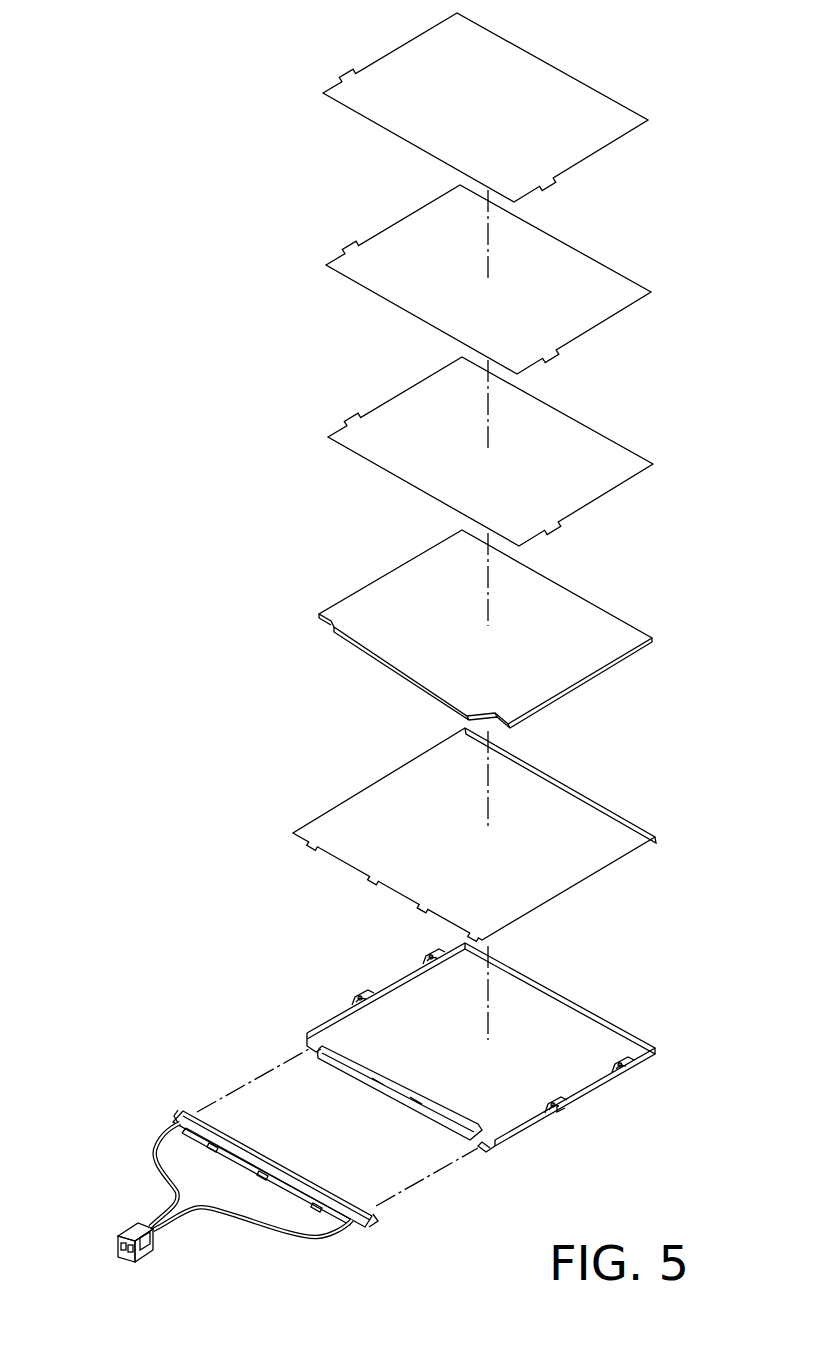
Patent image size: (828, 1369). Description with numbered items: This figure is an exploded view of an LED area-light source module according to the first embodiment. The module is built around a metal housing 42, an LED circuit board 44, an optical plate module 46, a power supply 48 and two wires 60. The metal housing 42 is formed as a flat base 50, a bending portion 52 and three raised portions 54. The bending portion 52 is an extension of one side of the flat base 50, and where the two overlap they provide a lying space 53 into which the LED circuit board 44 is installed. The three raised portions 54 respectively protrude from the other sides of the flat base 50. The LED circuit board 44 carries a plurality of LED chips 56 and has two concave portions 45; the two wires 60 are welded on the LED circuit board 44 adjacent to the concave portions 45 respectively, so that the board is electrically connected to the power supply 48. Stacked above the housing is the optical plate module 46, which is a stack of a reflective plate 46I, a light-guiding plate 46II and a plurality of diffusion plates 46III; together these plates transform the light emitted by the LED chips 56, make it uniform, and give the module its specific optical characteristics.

The metal housing 42 is at (330, 999).
The LED circuit board 44 is at (252, 1190).
The concave portions 45 is at (180, 1118).
The optical plate module 46 is at (673, 121).
The reflective plate 46I is at (388, 787).
The light-guiding plate 46II is at (388, 587).
The diffusion plates 46III is at (393, 63).
The power supply 48 is at (130, 1232).
The flat base 50 is at (457, 1049).
The bending portion 52 is at (357, 1063).
The lying space 53 is at (484, 1137).
The raised portions 54 is at (395, 975).
The LED chips 56 is at (309, 1205).
The wires 60 is at (162, 1135).